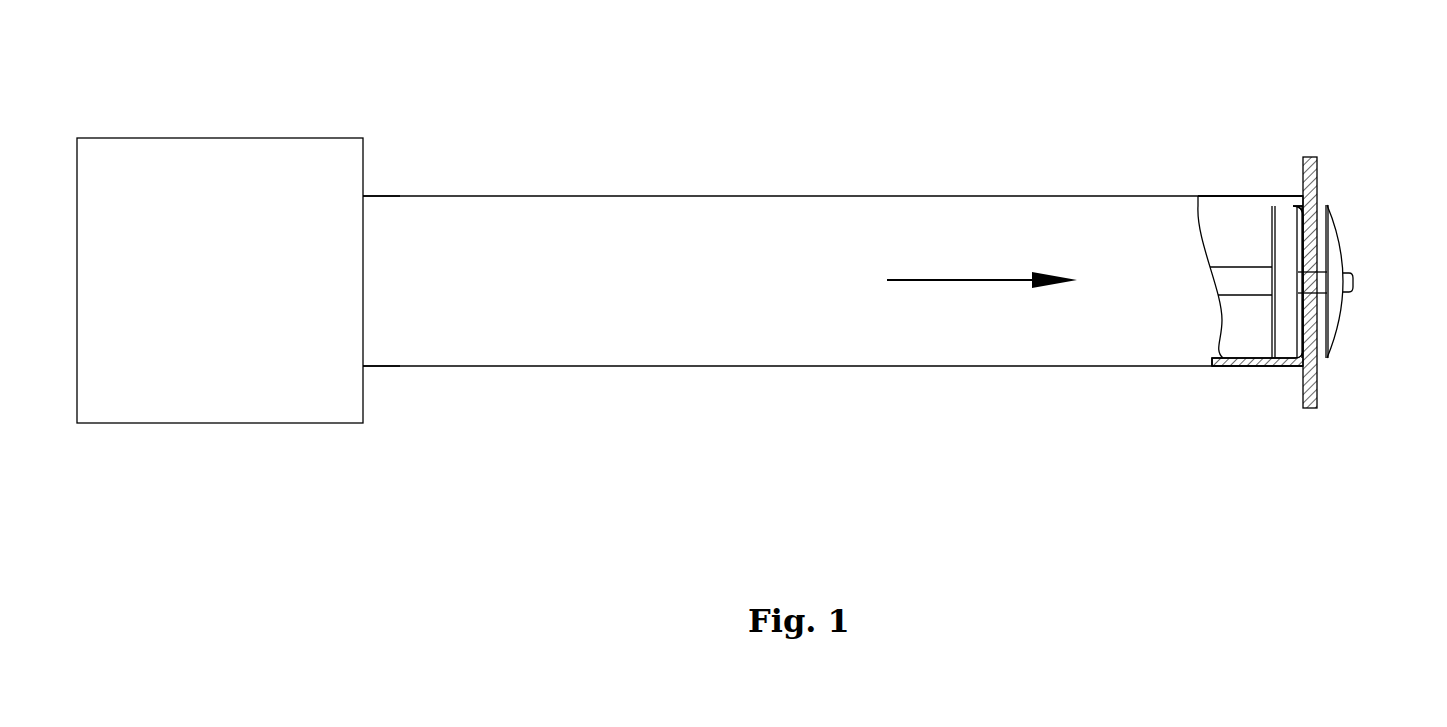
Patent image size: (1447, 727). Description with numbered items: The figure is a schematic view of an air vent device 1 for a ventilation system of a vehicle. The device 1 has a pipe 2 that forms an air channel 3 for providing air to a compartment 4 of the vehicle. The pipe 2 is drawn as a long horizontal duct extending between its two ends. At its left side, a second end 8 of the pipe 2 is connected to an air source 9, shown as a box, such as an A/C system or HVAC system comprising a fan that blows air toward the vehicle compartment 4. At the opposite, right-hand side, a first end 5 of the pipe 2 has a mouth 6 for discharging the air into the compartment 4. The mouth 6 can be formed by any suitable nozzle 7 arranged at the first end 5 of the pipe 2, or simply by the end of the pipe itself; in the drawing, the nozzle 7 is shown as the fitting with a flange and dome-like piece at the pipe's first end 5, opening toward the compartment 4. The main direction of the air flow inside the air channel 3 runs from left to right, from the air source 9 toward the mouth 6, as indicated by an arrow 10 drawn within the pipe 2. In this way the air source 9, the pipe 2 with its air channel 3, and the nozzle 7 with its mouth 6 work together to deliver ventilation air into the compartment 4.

The air vent device 1 is at (1375, 167).
The pipe 2 is at (540, 292).
The air channel 3 is at (732, 292).
The compartment 4 is at (1396, 362).
The first end 5 is at (1250, 136).
The mouth 6 is at (1307, 238).
The nozzle 7 is at (1287, 340).
The second end 8 is at (413, 107).
The air source 9 is at (223, 222).
The arrow 10 is at (962, 280).